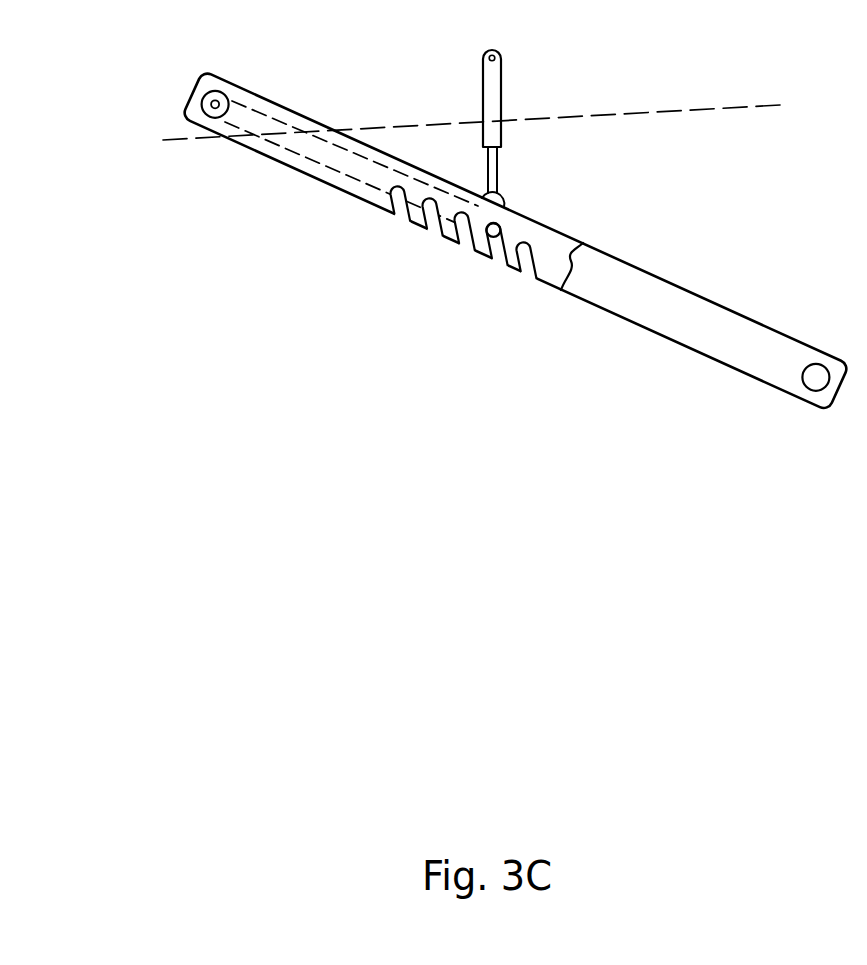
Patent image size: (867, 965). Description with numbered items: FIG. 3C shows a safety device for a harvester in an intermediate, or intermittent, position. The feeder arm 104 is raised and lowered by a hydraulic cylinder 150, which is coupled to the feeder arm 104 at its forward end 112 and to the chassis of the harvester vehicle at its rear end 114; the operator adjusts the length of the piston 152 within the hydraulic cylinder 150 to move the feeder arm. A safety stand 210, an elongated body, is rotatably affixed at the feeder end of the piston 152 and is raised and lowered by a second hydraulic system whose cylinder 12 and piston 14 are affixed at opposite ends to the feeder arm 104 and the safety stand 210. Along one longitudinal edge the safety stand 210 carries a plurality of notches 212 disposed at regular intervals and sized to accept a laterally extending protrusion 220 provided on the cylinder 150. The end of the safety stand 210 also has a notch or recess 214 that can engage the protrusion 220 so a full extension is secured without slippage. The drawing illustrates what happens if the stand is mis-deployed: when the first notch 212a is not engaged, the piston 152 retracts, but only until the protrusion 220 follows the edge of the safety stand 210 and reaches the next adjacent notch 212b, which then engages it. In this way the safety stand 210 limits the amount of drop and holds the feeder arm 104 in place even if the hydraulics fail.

The hydraulic cylinder 150 is at (718, 339).
The piston 152 is at (301, 145).
The safety stand 210 is at (288, 113).
The notches 212 is at (395, 213).
The first notch 212a is at (529, 278).
The next adjacent notch 212b is at (494, 262).
The notch or recess 214 is at (568, 268).
The protrusion 220 is at (496, 229).
The forward end 112 is at (214, 104).
The rear end 114 is at (815, 381).
The hydraulic cylinder 12 is at (495, 108).
The piston 14 is at (496, 173).
The feeder arm 104 is at (777, 98).